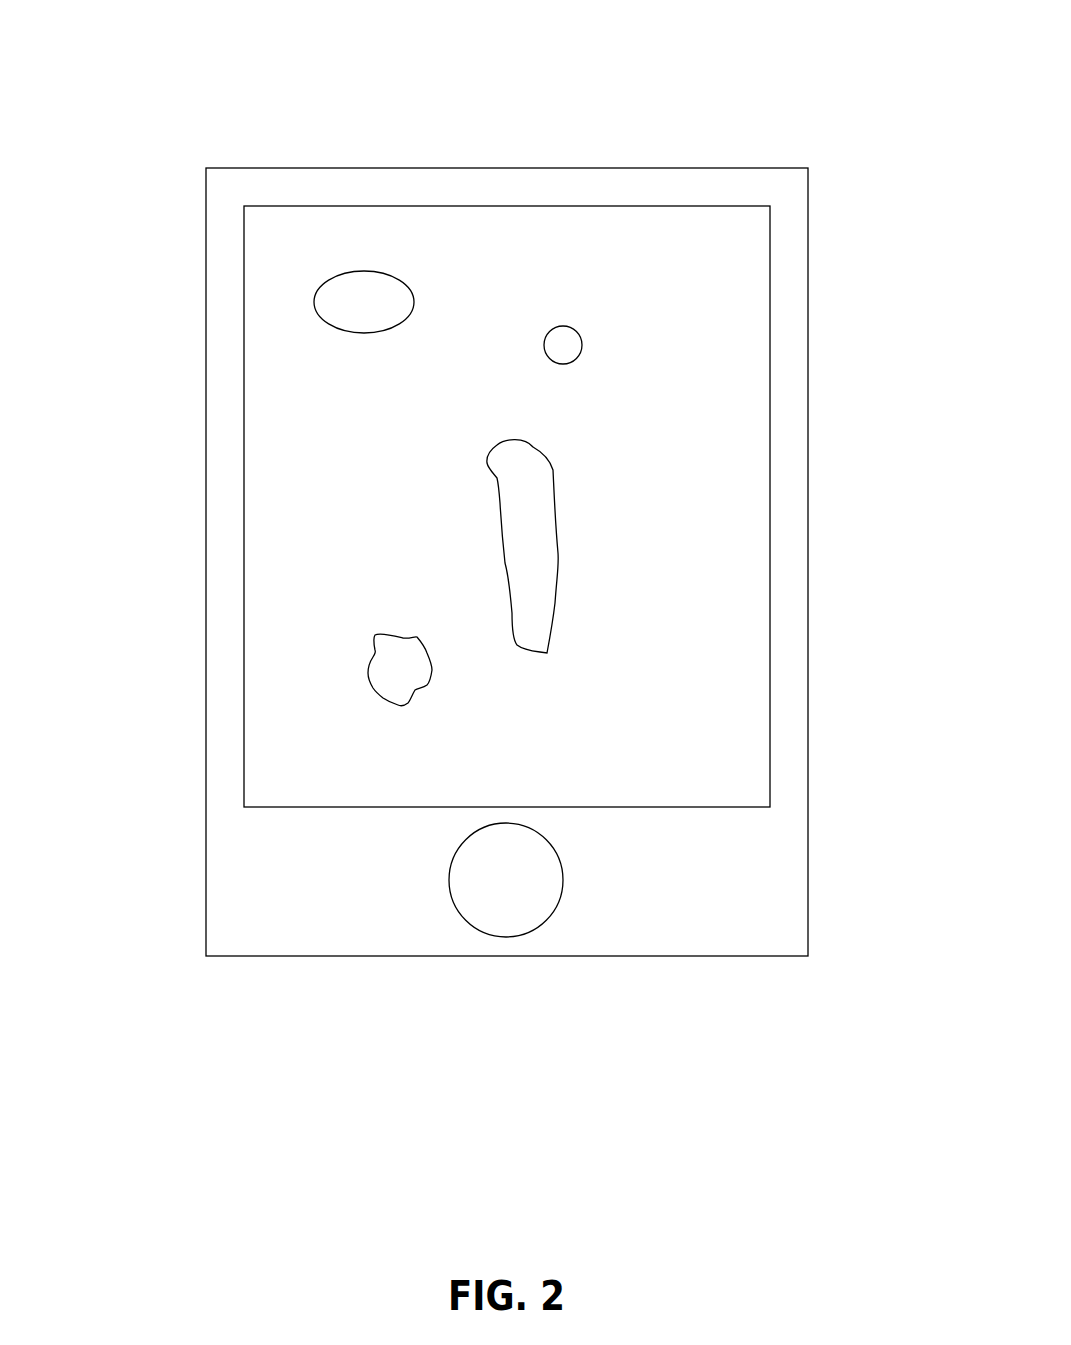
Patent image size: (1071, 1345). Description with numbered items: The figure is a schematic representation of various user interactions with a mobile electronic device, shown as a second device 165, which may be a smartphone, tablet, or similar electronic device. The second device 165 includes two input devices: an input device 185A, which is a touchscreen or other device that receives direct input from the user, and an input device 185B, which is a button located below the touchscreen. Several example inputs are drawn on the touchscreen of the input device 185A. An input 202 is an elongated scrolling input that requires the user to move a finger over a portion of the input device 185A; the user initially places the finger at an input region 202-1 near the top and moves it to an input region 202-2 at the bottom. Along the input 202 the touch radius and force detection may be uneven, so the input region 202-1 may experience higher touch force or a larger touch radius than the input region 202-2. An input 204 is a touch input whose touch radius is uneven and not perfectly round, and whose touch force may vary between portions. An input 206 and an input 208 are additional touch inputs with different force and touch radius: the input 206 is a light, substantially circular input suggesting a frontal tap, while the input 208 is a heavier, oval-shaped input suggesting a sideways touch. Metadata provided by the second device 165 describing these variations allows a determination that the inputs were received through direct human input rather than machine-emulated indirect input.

The second device 165 is at (256, 84).
The input device 185A is at (730, 205).
The input device 185B is at (536, 930).
The input 202 is at (557, 572).
The input region 202-1 is at (495, 443).
The input region 202-2 is at (545, 655).
The input 204 is at (372, 690).
The input 206 is at (582, 343).
The input 208 is at (314, 307).